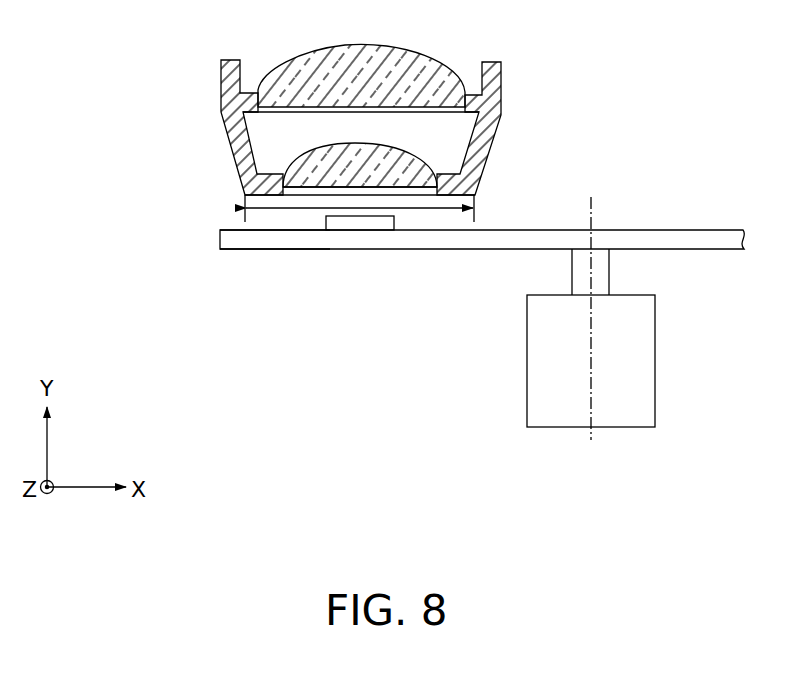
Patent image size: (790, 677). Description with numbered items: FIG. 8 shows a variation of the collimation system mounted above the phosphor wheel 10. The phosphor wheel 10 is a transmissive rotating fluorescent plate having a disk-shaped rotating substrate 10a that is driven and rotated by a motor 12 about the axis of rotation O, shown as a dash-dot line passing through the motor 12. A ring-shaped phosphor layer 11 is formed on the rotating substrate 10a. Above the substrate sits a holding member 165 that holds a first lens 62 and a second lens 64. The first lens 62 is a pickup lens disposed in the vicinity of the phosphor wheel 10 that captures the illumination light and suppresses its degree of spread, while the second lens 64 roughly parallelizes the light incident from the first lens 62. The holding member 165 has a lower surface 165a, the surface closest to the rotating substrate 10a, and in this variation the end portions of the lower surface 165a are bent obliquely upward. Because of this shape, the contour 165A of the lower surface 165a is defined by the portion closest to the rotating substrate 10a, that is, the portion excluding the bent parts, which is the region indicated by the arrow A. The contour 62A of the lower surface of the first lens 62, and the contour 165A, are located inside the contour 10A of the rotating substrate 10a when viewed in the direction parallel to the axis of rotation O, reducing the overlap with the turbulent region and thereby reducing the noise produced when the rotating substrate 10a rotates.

The phosphor wheel 10 is at (232, 222).
The contour of the rotating substrate 10A is at (220, 240).
The rotating substrate 10a is at (228, 240).
The phosphor layer 11 is at (370, 228).
The motor 12 is at (632, 383).
The first lens 62 is at (284, 150).
The contour of the lower surface of the first lens 62A is at (272, 192).
The second lens 64 is at (288, 58).
The holding member 165 is at (220, 100).
The contour of the lower surface of the holding member 165A is at (245, 195).
The lower surface of the holding member 165a is at (443, 197).
The arrow A is at (421, 210).
The axis of rotation O is at (594, 203).